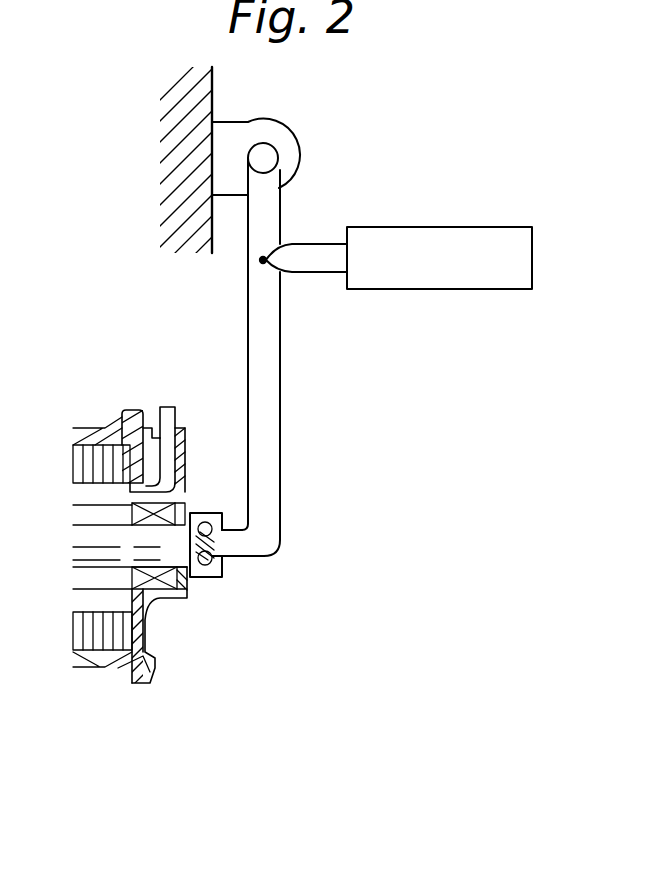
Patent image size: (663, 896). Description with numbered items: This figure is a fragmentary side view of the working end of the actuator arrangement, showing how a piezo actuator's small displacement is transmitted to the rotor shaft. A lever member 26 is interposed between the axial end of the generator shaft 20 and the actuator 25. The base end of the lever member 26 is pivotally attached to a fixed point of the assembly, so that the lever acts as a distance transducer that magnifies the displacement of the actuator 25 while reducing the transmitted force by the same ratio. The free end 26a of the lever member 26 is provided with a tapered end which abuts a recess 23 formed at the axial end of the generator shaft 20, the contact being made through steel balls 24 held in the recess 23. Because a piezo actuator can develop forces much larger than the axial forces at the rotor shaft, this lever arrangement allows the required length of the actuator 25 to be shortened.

The generator shaft 20 is at (157, 600).
The recess 23 is at (215, 577).
The steel balls 24 is at (203, 523).
The actuator 25 is at (468, 289).
The lever member 26 is at (272, 492).
The free end 26a is at (247, 550).